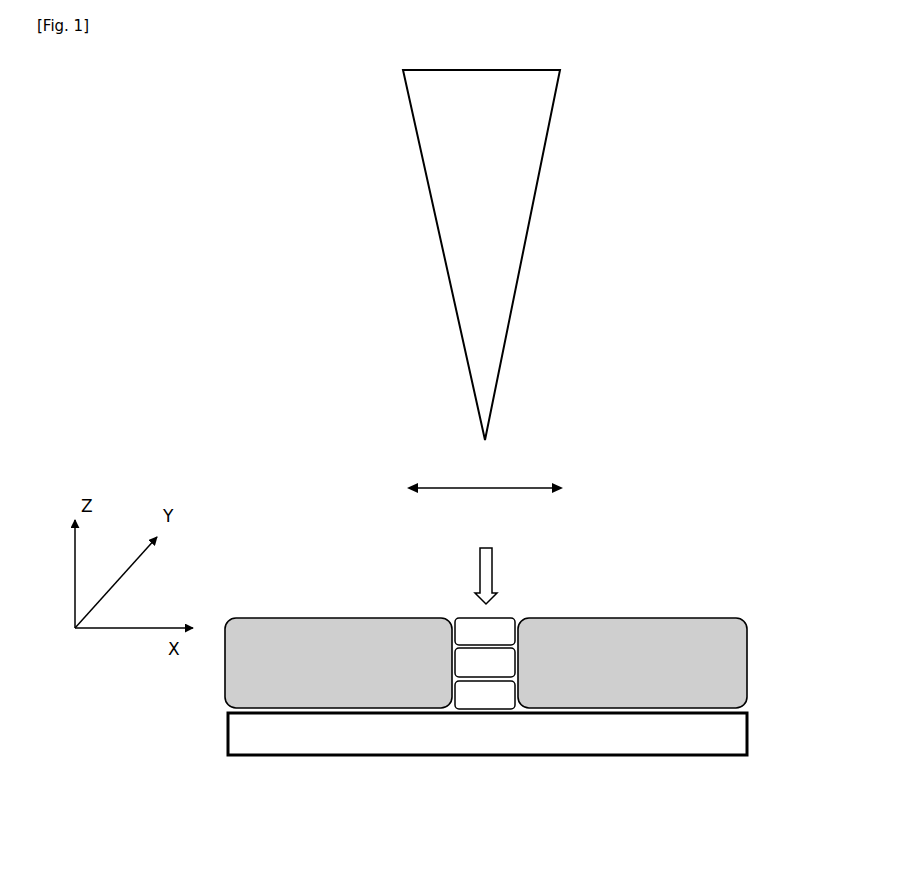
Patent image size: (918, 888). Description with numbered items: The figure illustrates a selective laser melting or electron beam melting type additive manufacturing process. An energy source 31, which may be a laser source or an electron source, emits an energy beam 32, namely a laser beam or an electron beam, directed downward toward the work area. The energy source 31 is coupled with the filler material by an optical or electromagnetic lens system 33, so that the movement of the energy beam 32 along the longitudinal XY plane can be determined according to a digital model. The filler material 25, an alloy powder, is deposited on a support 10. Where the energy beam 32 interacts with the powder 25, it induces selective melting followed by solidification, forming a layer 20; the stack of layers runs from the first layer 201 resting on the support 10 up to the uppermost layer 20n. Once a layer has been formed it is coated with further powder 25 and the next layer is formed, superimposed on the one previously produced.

The support 10 is at (693, 728).
The layer 20 is at (540, 697).
The n-th layer 20n is at (490, 632).
The first layer 201 is at (498, 706).
The filler material 25 is at (685, 627).
The energy source 31 is at (500, 241).
The energy beam 32 is at (474, 569).
The lens system 33 is at (533, 479).